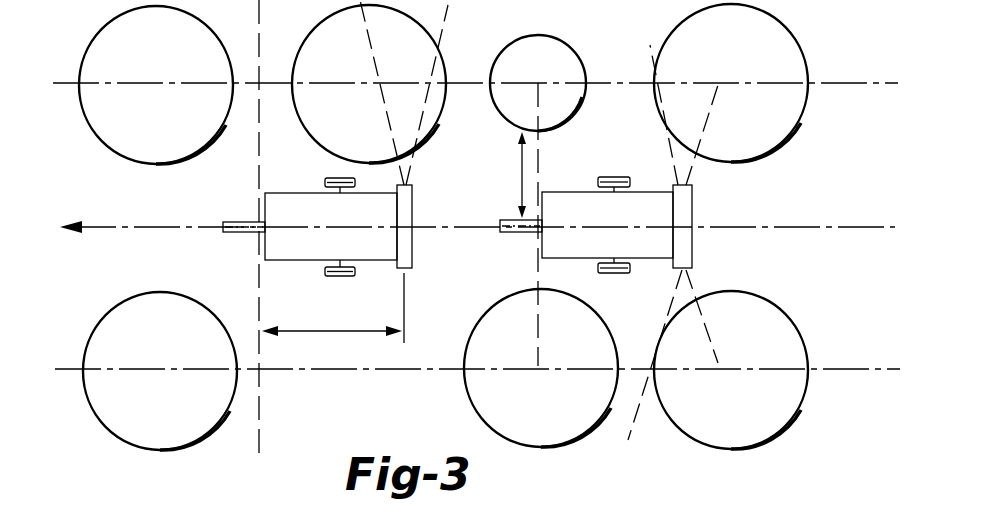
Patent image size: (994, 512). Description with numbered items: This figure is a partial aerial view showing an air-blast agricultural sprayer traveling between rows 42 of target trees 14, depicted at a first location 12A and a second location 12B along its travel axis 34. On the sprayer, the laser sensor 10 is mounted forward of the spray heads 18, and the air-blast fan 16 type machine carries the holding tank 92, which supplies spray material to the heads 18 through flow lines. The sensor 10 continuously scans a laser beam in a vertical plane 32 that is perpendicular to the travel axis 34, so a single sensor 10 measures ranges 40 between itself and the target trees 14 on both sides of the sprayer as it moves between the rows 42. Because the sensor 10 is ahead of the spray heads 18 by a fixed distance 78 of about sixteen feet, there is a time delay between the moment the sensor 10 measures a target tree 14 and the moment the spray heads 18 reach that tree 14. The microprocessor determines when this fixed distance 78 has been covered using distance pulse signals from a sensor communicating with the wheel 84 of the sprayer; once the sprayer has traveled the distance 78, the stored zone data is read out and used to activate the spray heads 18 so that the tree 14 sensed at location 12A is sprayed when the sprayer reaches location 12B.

The sensor 10 is at (248, 237).
The first location 12A is at (292, 210).
The second location 12B is at (584, 207).
The target trees 14 is at (190, 32).
The air-blast fan 16 is at (404, 212).
The spray heads 18 is at (407, 172).
The vertical plane 32 is at (537, 268).
The travel axis 34 is at (150, 204).
The ranges 40 is at (520, 178).
The rows 42 is at (854, 82).
The fixed distance 78 is at (346, 334).
The wheel 84 is at (620, 273).
The holding tank 92 is at (378, 246).